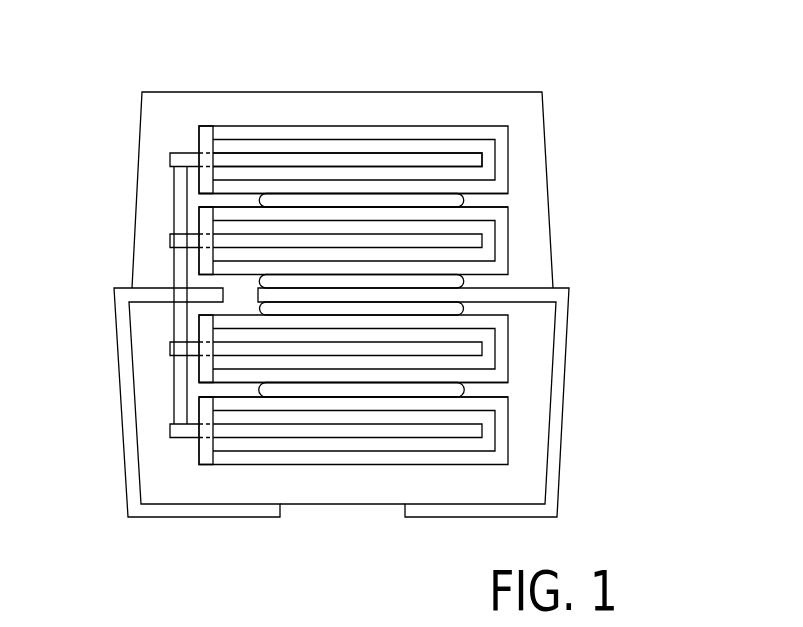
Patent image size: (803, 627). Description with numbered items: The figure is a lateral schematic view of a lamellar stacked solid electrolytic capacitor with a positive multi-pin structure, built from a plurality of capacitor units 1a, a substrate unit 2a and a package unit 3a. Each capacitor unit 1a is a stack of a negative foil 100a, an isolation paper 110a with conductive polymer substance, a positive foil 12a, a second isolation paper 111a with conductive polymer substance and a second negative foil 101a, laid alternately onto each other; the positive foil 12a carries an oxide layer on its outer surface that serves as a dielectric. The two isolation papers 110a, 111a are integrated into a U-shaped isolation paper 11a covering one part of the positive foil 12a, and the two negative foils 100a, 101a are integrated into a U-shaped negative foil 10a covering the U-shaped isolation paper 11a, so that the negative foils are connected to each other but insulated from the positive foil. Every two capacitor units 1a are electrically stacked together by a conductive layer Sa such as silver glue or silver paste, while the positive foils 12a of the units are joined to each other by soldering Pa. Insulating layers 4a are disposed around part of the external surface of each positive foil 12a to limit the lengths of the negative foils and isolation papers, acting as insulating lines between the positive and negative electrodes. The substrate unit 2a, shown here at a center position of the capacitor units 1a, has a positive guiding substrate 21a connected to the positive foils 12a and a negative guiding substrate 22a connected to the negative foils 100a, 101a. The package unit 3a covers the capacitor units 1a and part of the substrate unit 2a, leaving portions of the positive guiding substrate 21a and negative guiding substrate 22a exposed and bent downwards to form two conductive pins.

The capacitor unit 1a is at (470, 235).
The U-shaped negative foil 10a is at (445, 235).
The negative foil 100a is at (390, 130).
The negative foil 101a is at (395, 193).
The U-shaped isolation paper 11a is at (445, 265).
The isolation paper 110a is at (438, 143).
The isolation paper 111a is at (447, 173).
The positive foil 12a is at (471, 158).
The conductive layer Sa is at (472, 200).
The soldering Pa is at (171, 185).
The substrate unit 2a is at (341, 450).
The positive guiding substrate 21a is at (255, 512).
The negative guiding substrate 22a is at (272, 558).
The package unit 3a is at (141, 98).
The insulating layer 4a is at (207, 123).